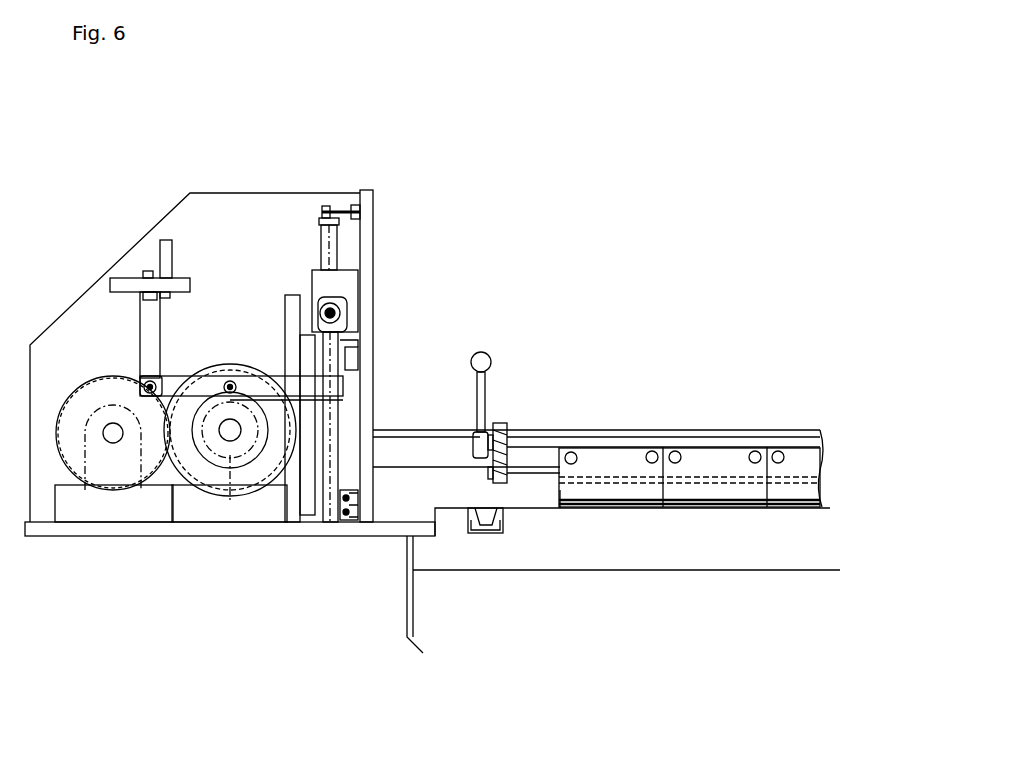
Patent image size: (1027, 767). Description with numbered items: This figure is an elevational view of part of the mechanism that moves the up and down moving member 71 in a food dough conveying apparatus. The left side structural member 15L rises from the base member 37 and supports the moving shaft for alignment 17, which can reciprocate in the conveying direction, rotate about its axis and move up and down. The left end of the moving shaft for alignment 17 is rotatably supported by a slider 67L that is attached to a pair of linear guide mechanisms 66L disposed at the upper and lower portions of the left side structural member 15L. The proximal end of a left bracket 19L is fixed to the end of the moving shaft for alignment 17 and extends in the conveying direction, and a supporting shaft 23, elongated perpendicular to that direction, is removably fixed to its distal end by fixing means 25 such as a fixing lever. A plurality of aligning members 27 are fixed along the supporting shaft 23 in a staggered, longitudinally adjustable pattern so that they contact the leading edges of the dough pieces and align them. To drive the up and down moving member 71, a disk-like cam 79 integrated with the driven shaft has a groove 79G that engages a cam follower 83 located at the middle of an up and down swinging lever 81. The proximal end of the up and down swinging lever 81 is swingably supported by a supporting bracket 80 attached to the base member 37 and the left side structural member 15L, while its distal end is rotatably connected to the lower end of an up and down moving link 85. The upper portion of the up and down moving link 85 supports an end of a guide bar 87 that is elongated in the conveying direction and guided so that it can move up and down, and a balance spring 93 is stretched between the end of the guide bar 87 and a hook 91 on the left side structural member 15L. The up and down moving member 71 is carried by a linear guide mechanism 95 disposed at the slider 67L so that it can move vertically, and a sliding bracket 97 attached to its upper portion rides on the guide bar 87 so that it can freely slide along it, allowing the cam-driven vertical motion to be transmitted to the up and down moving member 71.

The left side structural member 15L is at (370, 228).
The moving shaft for alignment 17 is at (445, 442).
The left bracket 19L is at (508, 425).
The supporting shaft 23 is at (552, 448).
The fixing means 25 is at (488, 372).
The aligning members 27 is at (800, 455).
The base member 37 is at (55, 538).
The linear guide mechanism 66L is at (350, 522).
The slider 67L is at (338, 430).
The up and down moving member 71 is at (292, 310).
The disk-like cam 79 is at (232, 496).
The groove 79G is at (188, 495).
The supporting bracket 80 is at (145, 338).
The up and down swinging lever 81 is at (166, 388).
The cam follower 83 is at (230, 381).
The up and down moving link 85 is at (355, 355).
The guide bar 87 is at (342, 313).
The hook 91 is at (342, 208).
The balance spring 93 is at (320, 228).
The linear guide mechanism 95 is at (312, 515).
The sliding bracket 97 is at (318, 296).